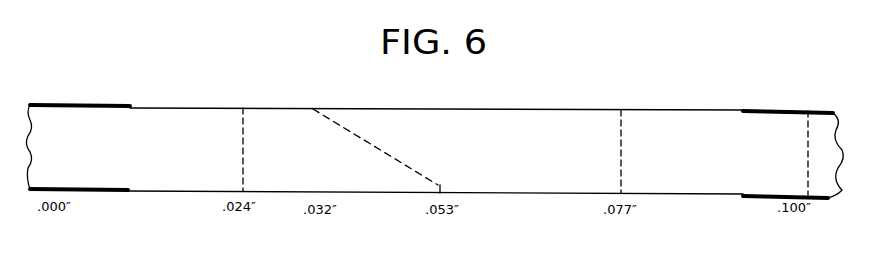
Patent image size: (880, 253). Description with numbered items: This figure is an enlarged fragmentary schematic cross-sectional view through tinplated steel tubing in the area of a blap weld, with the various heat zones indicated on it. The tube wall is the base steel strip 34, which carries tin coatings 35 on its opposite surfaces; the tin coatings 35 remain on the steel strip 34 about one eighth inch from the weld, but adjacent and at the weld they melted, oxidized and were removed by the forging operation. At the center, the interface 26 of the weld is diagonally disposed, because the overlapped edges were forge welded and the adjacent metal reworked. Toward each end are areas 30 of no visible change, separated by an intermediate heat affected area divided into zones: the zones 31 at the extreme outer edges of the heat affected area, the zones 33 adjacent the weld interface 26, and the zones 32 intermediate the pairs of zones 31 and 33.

The interface of the weld 26 is at (376, 147).
The areas of no visible changes 30 is at (48, 155).
The zones at the extreme outer edges of the heat affected area 31 is at (89, 156).
The zones intermediate the pairs of zones 31 and 33 32 is at (235, 161).
The zones adjacent the weld interface zone 33 is at (358, 168).
The base steel strip 34 is at (655, 117).
The tin coatings 35 is at (130, 103).